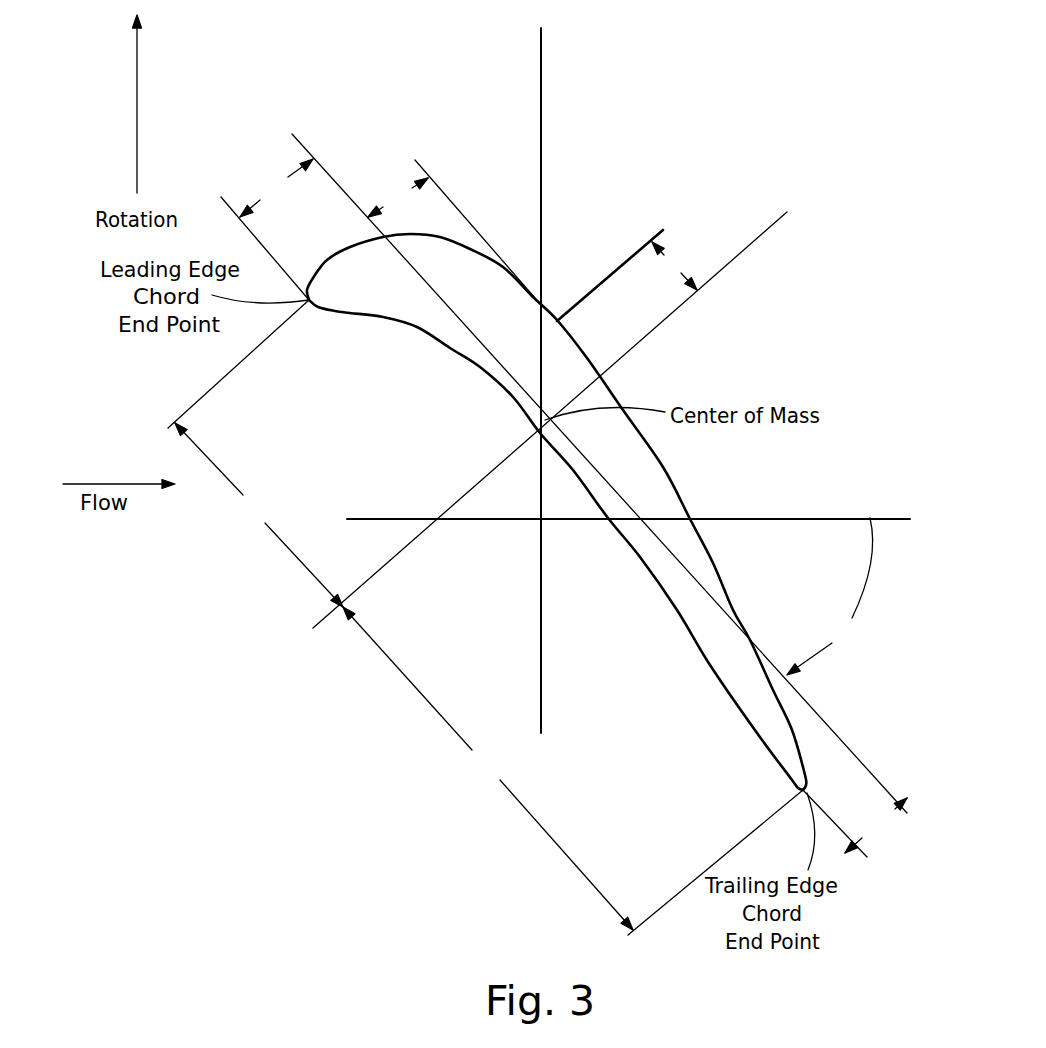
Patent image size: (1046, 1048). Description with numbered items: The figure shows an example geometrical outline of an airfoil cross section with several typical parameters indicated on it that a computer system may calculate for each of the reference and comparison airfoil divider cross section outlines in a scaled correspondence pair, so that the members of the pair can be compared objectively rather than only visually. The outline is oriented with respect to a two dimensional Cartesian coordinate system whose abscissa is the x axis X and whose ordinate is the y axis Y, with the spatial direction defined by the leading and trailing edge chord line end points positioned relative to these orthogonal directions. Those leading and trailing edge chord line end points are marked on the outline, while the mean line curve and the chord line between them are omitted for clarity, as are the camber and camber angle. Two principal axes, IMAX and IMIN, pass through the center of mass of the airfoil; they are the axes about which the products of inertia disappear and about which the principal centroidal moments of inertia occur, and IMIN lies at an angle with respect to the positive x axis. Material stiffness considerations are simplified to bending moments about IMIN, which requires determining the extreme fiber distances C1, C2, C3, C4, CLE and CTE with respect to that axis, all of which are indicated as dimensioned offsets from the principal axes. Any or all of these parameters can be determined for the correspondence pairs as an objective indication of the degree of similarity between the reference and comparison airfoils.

The extreme fiber distance C1 is at (267, 229).
The extreme fiber distance C2 is at (855, 823).
The extreme fiber distance C3 is at (451, 229).
The extreme fiber distance C4 is at (627, 275).
The leading edge extreme fiber distance CLE is at (255, 453).
The trailing edge extreme fiber distance CTE is at (573, 771).
The principal axis of maximum moment of inertia IMAX is at (753, 242).
The principal axis of minimum moment of inertia IMIN is at (810, 707).
The x axis X is at (628, 532).
The y axis Y is at (553, 380).